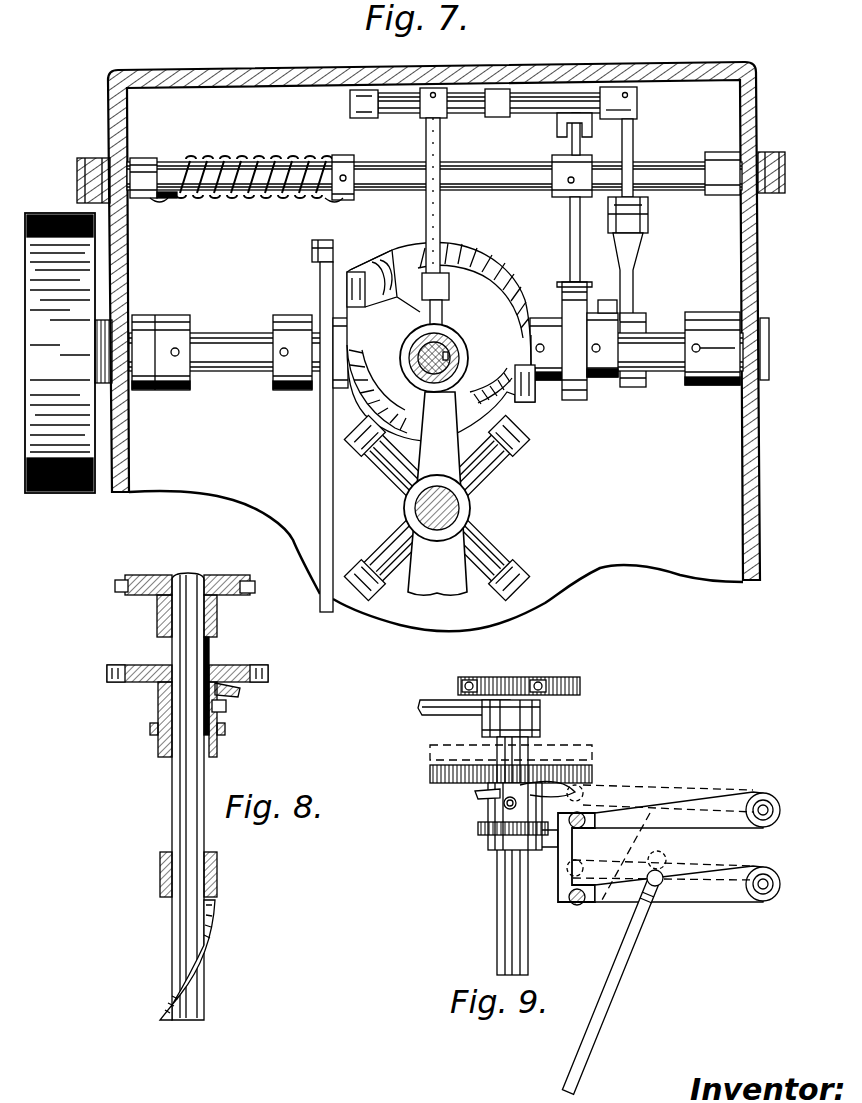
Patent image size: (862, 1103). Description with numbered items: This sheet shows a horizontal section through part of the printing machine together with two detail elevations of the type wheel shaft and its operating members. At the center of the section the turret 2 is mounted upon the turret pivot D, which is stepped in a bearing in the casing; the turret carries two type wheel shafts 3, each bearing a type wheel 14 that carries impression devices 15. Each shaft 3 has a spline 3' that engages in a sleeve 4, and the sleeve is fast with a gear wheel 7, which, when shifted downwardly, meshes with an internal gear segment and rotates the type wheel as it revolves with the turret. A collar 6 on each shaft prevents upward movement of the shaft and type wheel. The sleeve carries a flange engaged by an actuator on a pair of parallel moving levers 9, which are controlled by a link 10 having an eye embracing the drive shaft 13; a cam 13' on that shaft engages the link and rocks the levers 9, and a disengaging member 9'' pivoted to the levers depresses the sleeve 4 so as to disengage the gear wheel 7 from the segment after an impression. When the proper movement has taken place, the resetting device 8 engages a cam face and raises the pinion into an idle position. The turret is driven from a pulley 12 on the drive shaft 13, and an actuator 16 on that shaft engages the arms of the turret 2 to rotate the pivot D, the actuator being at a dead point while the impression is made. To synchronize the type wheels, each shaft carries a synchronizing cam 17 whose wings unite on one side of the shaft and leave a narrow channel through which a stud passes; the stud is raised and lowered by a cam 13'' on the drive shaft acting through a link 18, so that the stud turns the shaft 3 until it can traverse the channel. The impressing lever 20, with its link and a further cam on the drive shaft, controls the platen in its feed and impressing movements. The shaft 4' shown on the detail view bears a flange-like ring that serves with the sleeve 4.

In FIG. 7, the turret 2 is at (490, 470).
In FIG. 7, the type wheel shaft 3 is at (431, 384).
In FIG. 8, the type wheel shaft 3 is at (189, 781).
In FIG. 9, the type wheel shaft 3 is at (494, 856).
In FIG. 7, the spline 3' is at (452, 384).
In FIG. 8, the spline 3' is at (223, 686).
In FIG. 7, the sleeve 4 is at (433, 345).
In FIG. 8, the sleeve 4 is at (168, 719).
In FIG. 9, the sleeve 4 is at (510, 815).
In FIG. 7, the arm of sleeve 4' is at (437, 493).
In FIG. 9, the arm of sleeve 4' is at (490, 834).
In FIG. 8, the collar 6 is at (218, 630).
In FIG. 9, the collar 6 is at (540, 722).
In FIG. 8, the gear wheel 7 is at (110, 676).
In FIG. 9, the gear wheel 7 is at (432, 776).
In FIG. 8, the resetting device 8 is at (240, 692).
In FIG. 9, the resetting device 8 is at (476, 795).
In FIG. 7, the parallel moving levers 9 is at (447, 196).
In FIG. 9, the parallel moving levers 9 is at (659, 845).
In FIG. 7, the disengaging member 9'' is at (444, 278).
In FIG. 7, the link 10 is at (634, 272).
In FIG. 9, the link 10 is at (612, 992).
In FIG. 7, the pulley 12 is at (68, 353).
In FIG. 7, the drive shaft 13 is at (436, 340).
In FIG. 7, the cam 13' is at (607, 289).
In FIG. 7, the cam 13'' is at (285, 375).
In FIG. 8, the type wheel 14 is at (230, 575).
In FIG. 9, the type wheel 14 is at (550, 677).
In FIG. 8, the impression device 15 is at (252, 593).
In FIG. 9, the impression device 15 is at (524, 677).
In FIG. 7, the actuator 16 is at (470, 263).
In FIG. 8, the synchronizing cam 17 is at (208, 948).
In FIG. 7, the link 18 is at (320, 455).
In FIG. 7, the impressing lever 20 is at (80, 173).
In FIG. 7, the turret pivot D is at (410, 508).